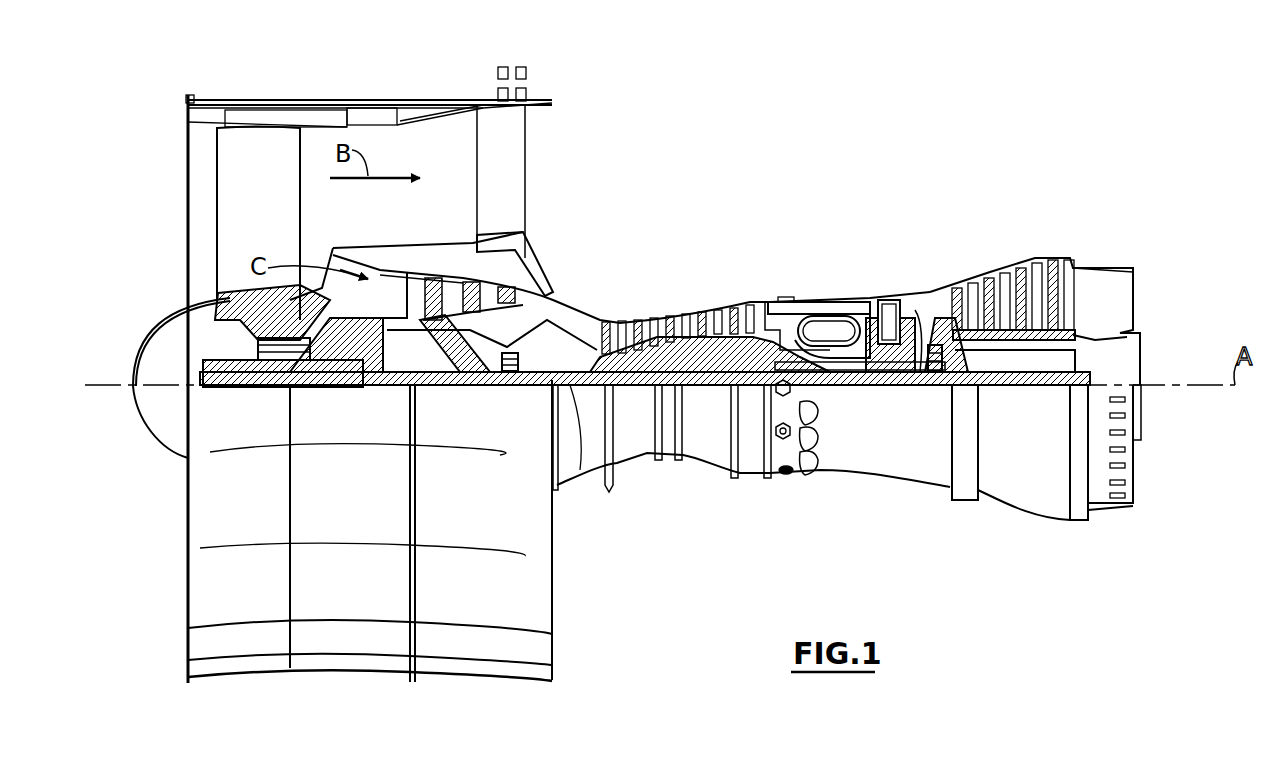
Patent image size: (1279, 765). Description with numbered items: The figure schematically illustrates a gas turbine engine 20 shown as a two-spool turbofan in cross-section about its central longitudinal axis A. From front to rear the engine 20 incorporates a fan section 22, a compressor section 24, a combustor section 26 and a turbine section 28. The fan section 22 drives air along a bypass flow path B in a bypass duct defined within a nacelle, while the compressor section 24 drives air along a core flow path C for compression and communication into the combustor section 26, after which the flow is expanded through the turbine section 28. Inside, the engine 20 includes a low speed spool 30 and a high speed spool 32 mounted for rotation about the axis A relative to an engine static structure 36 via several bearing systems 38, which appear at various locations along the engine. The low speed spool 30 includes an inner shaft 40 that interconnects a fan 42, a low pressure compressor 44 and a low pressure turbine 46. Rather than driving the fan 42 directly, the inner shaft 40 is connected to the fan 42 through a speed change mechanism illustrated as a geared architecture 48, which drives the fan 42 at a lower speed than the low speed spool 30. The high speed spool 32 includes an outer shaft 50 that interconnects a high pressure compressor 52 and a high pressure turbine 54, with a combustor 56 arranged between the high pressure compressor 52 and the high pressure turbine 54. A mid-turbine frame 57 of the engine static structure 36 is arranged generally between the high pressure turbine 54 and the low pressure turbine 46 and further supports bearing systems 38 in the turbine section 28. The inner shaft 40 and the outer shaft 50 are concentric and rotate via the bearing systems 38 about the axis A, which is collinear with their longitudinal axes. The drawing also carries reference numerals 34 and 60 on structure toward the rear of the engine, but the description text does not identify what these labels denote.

The gas turbine engine 20 is at (830, 152).
The fan section 22 is at (395, 78).
The compressor section 24 is at (410, 218).
The combustor section 26 is at (860, 218).
The turbine section 28 is at (1082, 218).
The low speed spool 30 is at (708, 395).
The high speed spool 32 is at (766, 355).
The engine static structure support 34 is at (1035, 387).
The engine static structure 36 is at (748, 476).
The bearing systems 38 is at (268, 387).
The inner shaft 40 is at (580, 470).
The fan 42 is at (275, 226).
The low pressure compressor 44 is at (485, 285).
The low pressure turbine 46 is at (1018, 280).
The geared architecture 48 is at (372, 387).
The outer shaft 50 is at (836, 387).
The high pressure compressor 52 is at (680, 350).
The high pressure turbine 54 is at (885, 302).
The combustor 56 is at (835, 326).
The mid-turbine frame 57 is at (938, 288).
The mid-turbine frame airfoils 60 is at (968, 390).